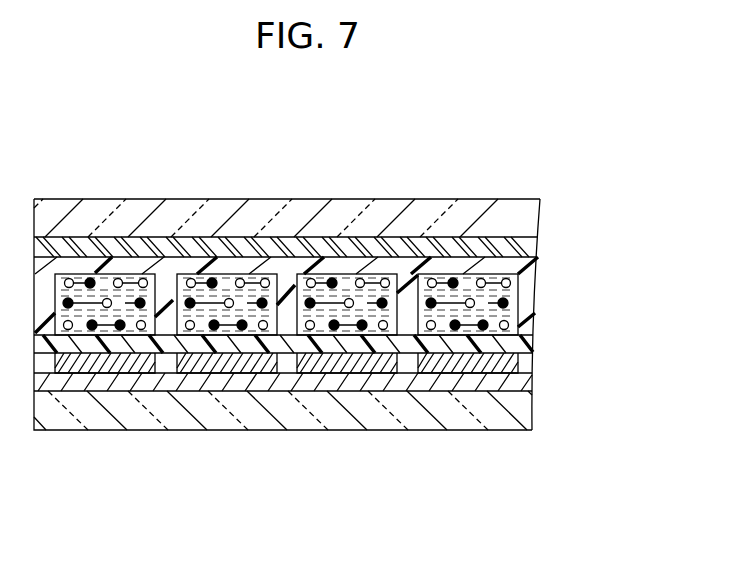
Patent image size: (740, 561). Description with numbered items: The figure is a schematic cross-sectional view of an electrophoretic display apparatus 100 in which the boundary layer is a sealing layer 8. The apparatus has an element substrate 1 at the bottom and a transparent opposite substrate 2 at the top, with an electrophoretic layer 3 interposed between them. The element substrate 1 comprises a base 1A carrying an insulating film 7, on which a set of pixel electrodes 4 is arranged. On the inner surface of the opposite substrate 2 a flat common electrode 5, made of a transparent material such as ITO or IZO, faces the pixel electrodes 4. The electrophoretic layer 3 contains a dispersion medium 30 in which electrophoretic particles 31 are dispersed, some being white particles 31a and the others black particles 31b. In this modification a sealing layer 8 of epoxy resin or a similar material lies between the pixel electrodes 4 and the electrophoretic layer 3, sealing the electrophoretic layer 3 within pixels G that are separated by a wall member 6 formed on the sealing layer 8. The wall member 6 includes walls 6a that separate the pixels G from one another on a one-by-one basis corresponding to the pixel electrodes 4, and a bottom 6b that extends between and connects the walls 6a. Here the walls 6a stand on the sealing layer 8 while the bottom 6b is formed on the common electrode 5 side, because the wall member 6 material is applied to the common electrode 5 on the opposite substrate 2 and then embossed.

The electrophoretic display apparatus 100 is at (385, 118).
The element substrate 1 is at (528, 412).
The base 1A is at (283, 410).
The opposite substrate 2 is at (540, 203).
The electrophoretic layer 3 is at (198, 114).
The dispersion medium 30 is at (266, 279).
The electrophoretic particles 31 is at (260, 157).
The white particles 31a is at (190, 279).
The black particles 31b is at (213, 279).
The pixel electrodes 4 is at (516, 364).
The common electrode 5 is at (532, 248).
The wall member 6 is at (393, 486).
The walls 6a is at (283, 308).
The bottom 6b is at (368, 265).
The insulating film 7 is at (528, 388).
The sealing layer 8 is at (525, 343).
The pixels G is at (94, 257).